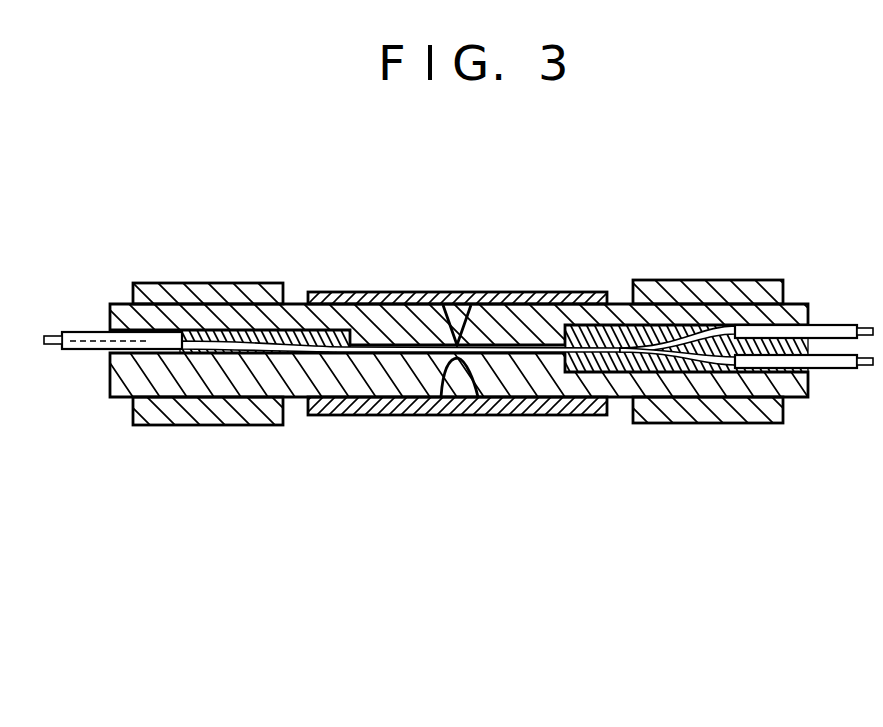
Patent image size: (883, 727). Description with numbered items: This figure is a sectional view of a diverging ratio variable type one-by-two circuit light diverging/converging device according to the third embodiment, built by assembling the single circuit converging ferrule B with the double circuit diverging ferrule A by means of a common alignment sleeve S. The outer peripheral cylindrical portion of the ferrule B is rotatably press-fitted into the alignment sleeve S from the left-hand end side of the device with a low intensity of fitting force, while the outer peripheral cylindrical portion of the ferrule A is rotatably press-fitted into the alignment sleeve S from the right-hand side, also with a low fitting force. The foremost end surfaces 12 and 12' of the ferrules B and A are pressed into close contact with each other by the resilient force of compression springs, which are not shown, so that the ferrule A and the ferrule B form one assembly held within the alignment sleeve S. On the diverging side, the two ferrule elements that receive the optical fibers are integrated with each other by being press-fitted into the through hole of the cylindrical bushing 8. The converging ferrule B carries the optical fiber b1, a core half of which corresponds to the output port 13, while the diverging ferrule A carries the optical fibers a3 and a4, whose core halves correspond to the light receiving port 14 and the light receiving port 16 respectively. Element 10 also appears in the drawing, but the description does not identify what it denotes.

The double circuit diverging ferrule A is at (741, 316).
The single circuit converging ferrule B is at (190, 318).
The cylindrical bushing 8 is at (708, 257).
The lower body half 10 is at (459, 418).
The foremost end surface 12 is at (476, 420).
The foremost end surface 12' is at (459, 393).
The output port 13 is at (283, 282).
The light receiving port 14 is at (669, 292).
The light receiving port 16 is at (492, 440).
The common alignment sleeve S is at (457, 278).
The optical fiber b1 is at (111, 314).
The optical fiber a3 is at (805, 308).
The optical fiber a4 is at (804, 390).